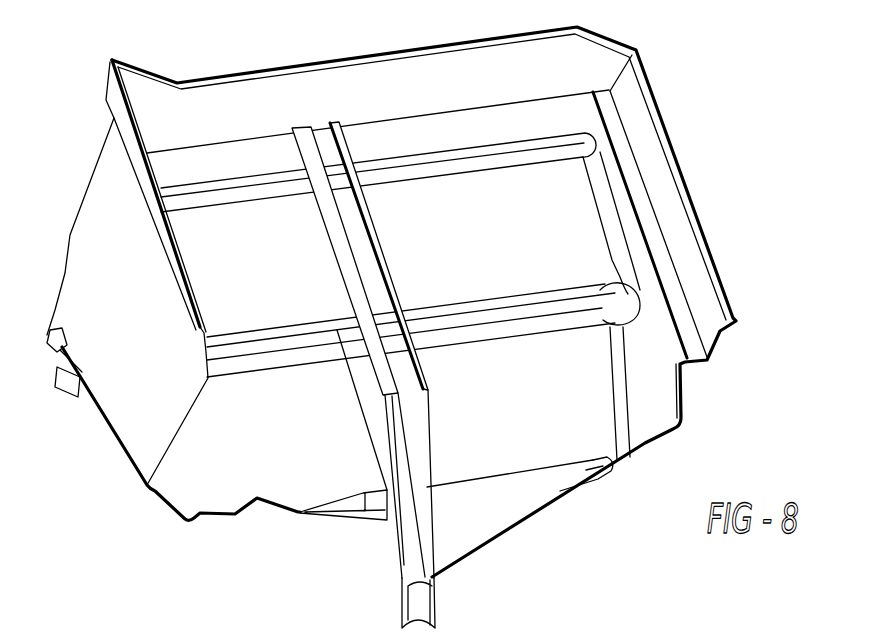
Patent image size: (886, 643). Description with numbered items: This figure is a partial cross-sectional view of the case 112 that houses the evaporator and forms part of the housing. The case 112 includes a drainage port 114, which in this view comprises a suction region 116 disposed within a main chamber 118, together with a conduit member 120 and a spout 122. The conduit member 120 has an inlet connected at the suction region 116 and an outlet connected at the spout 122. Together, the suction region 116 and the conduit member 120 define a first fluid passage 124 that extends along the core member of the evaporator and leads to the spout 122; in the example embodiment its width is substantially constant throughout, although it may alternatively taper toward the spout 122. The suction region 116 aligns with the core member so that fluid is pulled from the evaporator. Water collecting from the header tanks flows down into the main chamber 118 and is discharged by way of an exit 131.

The case 112 is at (120, 227).
The drainage port 114 is at (440, 447).
The suction region 116 is at (380, 250).
The main chamber 118 is at (452, 97).
The conduit member 120 is at (403, 540).
The spout 122 is at (403, 600).
The first fluid passage 124 is at (405, 373).
The exit 131 is at (60, 398).